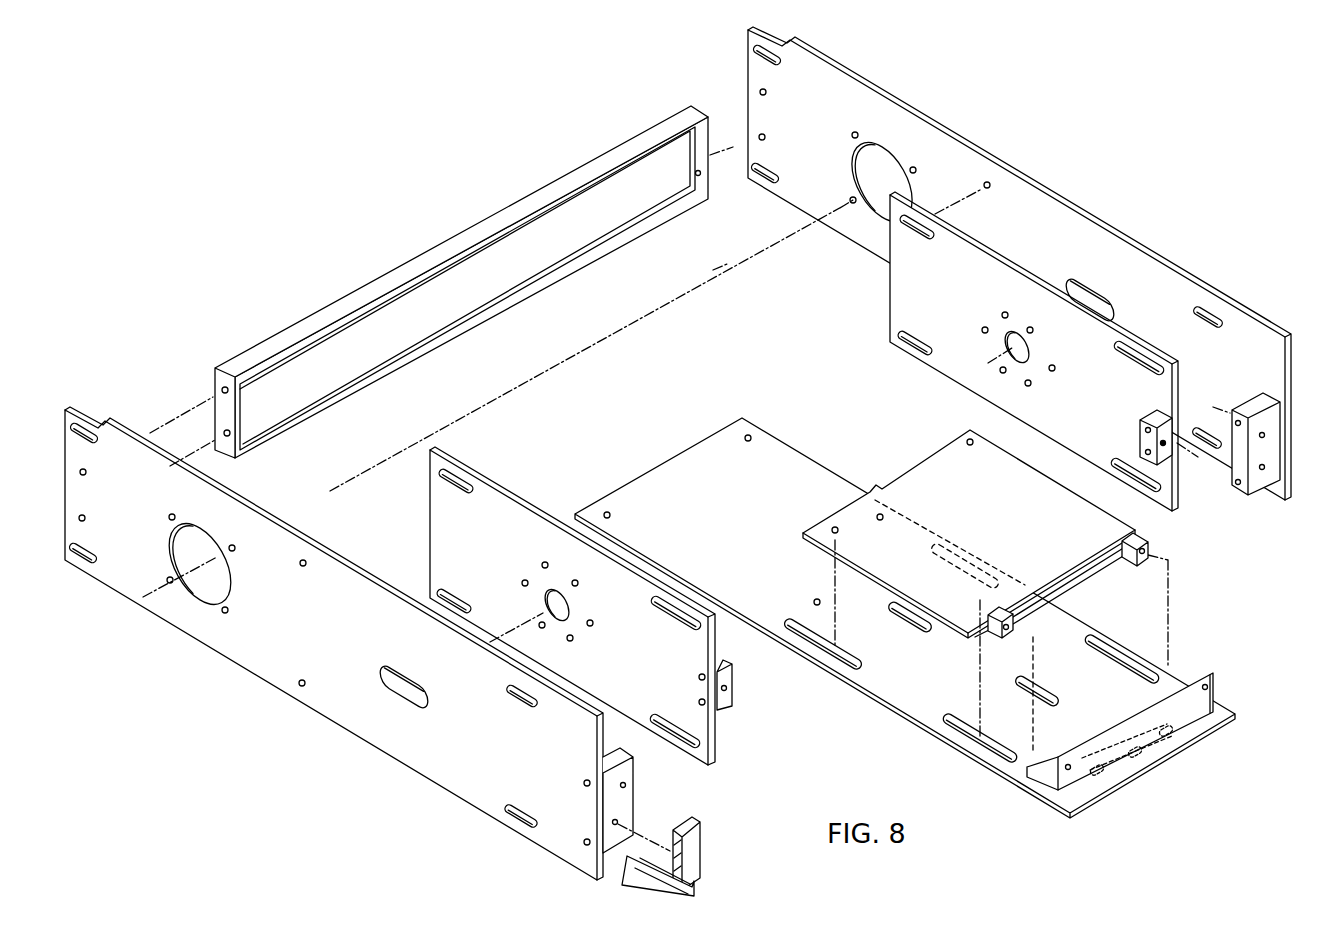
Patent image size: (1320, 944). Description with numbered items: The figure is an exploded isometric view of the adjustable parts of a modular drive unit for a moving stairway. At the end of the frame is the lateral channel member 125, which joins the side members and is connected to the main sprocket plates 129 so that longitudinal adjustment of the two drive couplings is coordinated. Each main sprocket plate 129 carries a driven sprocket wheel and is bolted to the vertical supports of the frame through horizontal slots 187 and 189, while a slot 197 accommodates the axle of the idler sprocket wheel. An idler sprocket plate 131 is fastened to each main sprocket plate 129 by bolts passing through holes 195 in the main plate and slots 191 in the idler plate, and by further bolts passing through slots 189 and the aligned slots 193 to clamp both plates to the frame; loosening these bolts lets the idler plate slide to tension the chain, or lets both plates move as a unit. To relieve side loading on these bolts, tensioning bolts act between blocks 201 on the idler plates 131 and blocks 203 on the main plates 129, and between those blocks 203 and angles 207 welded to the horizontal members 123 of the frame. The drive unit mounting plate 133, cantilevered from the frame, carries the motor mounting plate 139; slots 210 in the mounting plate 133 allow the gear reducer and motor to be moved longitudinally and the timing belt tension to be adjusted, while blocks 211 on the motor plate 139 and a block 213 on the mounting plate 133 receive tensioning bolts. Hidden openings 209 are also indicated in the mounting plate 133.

The horizontal member 123 is at (620, 886).
The lateral channel member 125 is at (520, 198).
The main sprocket plate 129 is at (129, 433).
The idler sprocket plate 131 is at (527, 500).
The drive unit mounting plate 133 is at (874, 703).
The motor mounting plate 139 is at (930, 452).
The horizontal slot 187 is at (97, 441).
The horizontal slot 189 is at (523, 708).
The slot 191 is at (463, 492).
The slot 193 is at (660, 606).
The hole 195 is at (305, 566).
The slot 197 is at (409, 670).
The block 201 is at (732, 688).
The block 203 is at (633, 793).
The angle 207 is at (702, 831).
The hidden slot 209 is at (1165, 731).
The slot 210 is at (806, 626).
The block 211 is at (1122, 542).
The block 213 is at (1222, 652).